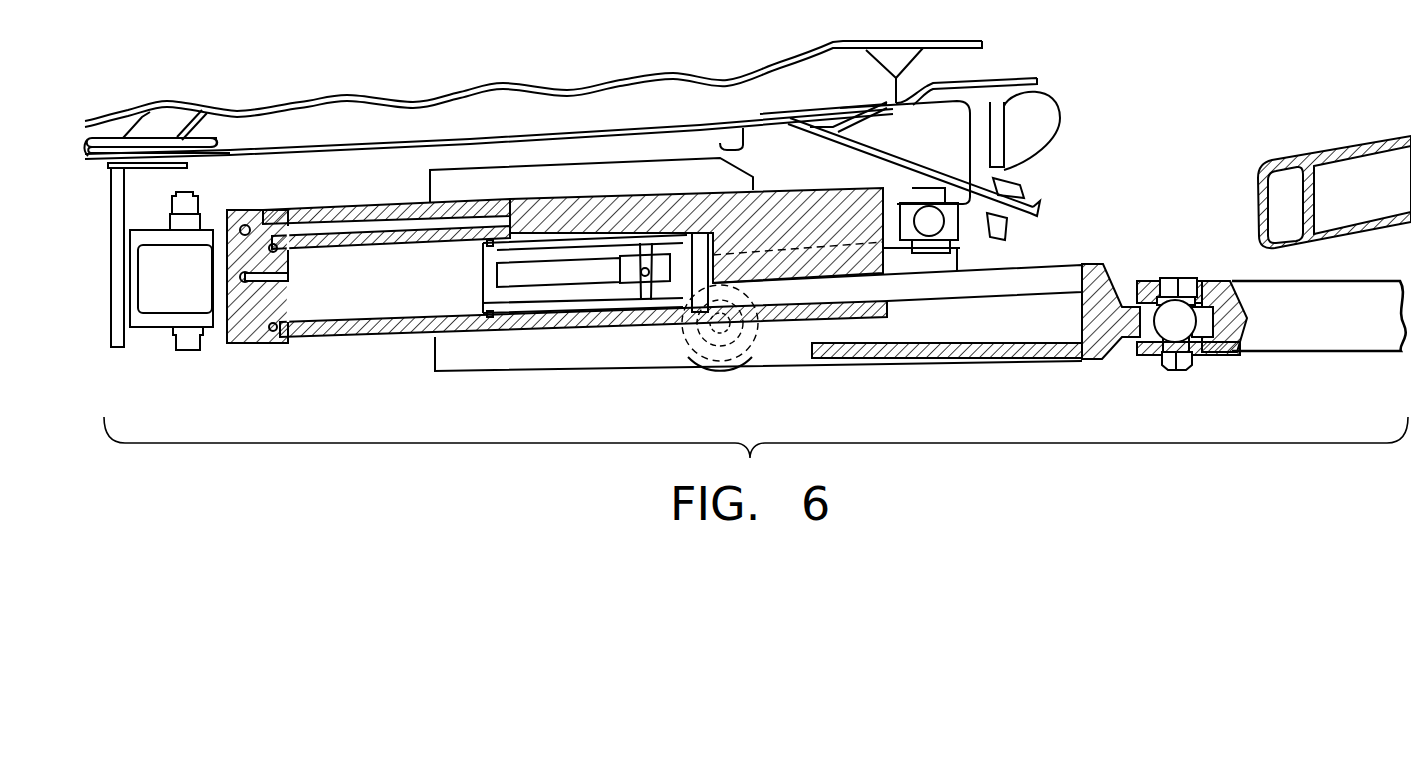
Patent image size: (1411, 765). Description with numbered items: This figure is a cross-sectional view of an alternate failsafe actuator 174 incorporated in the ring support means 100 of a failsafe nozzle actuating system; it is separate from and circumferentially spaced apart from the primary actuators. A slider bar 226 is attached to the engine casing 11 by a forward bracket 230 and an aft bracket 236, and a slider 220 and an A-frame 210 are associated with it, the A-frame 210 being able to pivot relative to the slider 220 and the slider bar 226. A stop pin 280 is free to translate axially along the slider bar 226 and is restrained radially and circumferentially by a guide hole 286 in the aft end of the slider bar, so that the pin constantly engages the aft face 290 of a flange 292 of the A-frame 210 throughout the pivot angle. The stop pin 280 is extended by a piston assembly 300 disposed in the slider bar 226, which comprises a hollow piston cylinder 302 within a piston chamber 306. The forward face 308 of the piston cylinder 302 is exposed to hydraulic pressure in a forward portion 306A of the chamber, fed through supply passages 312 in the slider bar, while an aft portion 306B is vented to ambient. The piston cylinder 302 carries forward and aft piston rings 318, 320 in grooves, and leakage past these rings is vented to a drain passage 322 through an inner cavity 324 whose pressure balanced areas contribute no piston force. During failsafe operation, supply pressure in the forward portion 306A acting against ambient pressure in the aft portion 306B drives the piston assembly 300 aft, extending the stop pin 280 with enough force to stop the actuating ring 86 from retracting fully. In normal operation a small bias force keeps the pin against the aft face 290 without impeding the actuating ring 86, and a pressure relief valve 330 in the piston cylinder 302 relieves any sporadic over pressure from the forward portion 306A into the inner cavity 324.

The engine casing 11 is at (262, 147).
The ring support means 100 is at (341, 175).
The drain passage 322 is at (372, 203).
The forward bracket 230 is at (127, 203).
The slider bar 226 is at (295, 205).
The piston chamber 306 is at (382, 284).
The supply passages 312 is at (283, 277).
The forward portion of the piston chamber 306A is at (400, 323).
The aft portion of the piston chamber 306B is at (725, 253).
The slider 220 is at (553, 168).
The piston cylinder 302 is at (590, 292).
The forward piston ring 318 is at (481, 262).
The inner cavity 324 is at (597, 238).
The pressure relief valve 330 is at (625, 300).
The aft piston ring 320 is at (687, 262).
The forward face of the piston cylinder 308 is at (465, 320).
The piston assembly 300 is at (585, 367).
The alternate failsafe actuator 174 is at (732, 327).
The A-frame 210 is at (867, 361).
The stop pin 280 is at (990, 270).
The guide hole 286 is at (863, 302).
The aft face 290 is at (1082, 317).
The flange 292 is at (1105, 280).
The actuating ring 86 is at (1237, 350).
The aft bracket 236 is at (1007, 168).